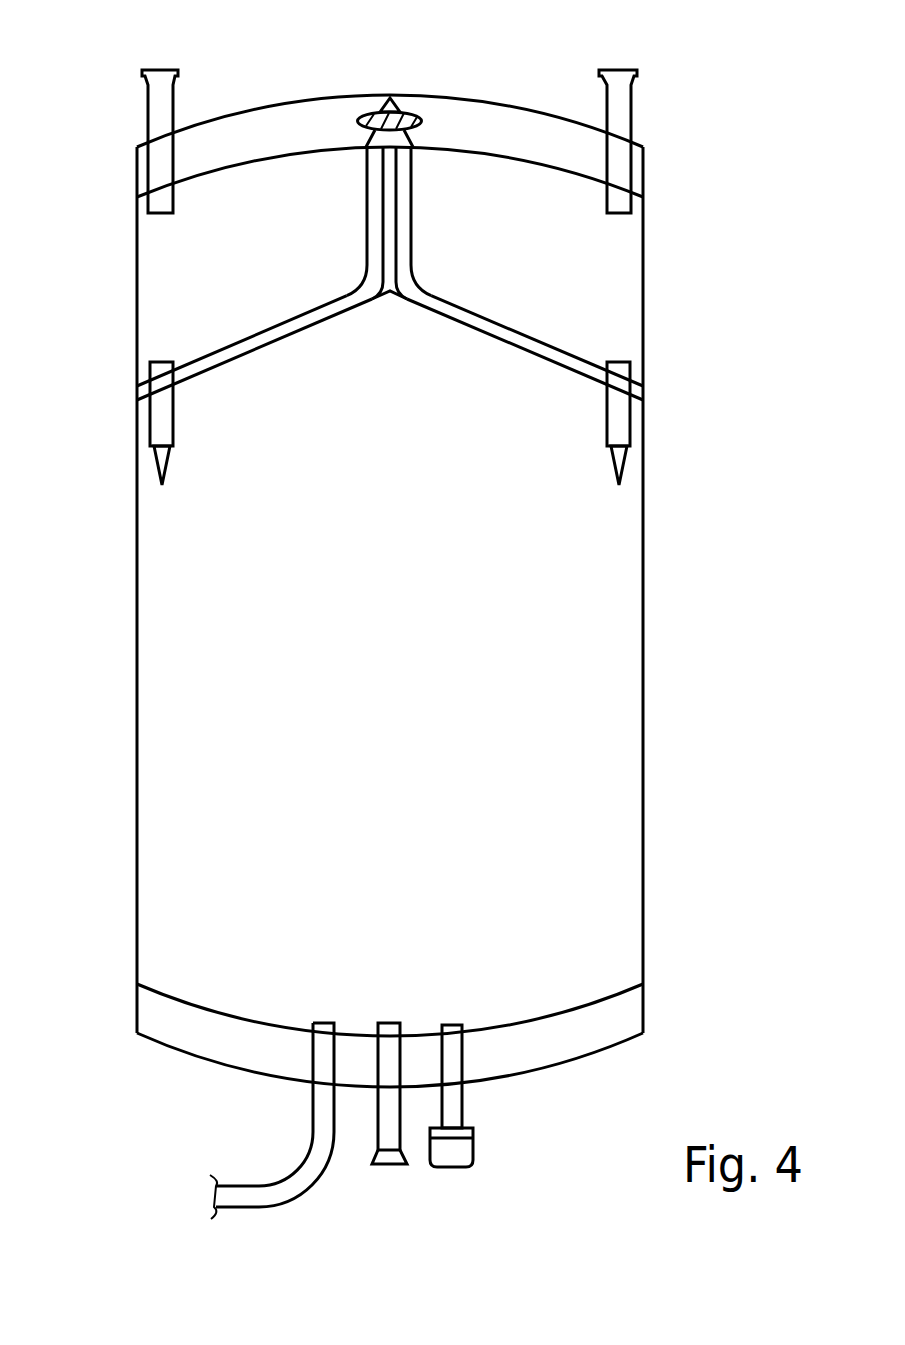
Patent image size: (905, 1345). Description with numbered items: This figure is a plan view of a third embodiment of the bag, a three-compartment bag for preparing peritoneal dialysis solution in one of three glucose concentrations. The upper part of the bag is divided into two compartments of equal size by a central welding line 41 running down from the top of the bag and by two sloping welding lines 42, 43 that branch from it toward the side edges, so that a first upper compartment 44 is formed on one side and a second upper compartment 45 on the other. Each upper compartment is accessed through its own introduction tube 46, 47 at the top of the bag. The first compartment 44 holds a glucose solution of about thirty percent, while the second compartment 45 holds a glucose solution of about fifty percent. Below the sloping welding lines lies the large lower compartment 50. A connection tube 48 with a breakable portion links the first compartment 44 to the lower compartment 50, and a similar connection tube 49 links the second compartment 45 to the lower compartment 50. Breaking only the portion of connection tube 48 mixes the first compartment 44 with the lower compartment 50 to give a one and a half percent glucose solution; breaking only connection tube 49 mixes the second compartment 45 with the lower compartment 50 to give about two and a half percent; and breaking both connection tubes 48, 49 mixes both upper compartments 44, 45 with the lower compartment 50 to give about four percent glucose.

The welding line 41 is at (365, 193).
The sloping welding line 42 is at (220, 347).
The sloping welding line 43 is at (573, 350).
The first upper compartment 44 is at (153, 258).
The second upper compartment 45 is at (628, 258).
The introduction tube 46 is at (148, 107).
The introduction tube 47 is at (632, 105).
The connection tube 48 is at (148, 427).
The connection tube 49 is at (628, 422).
The lower compartment 50 is at (160, 727).